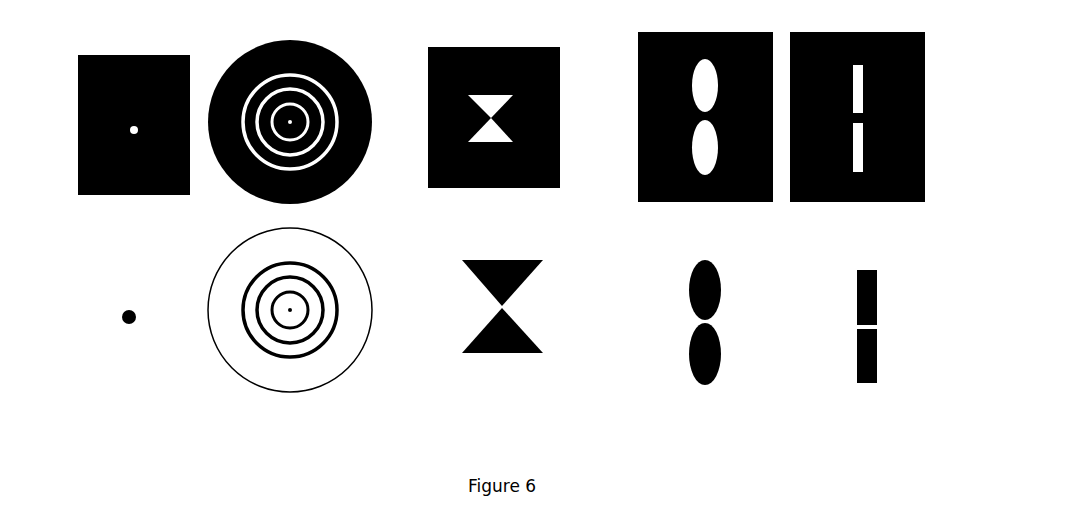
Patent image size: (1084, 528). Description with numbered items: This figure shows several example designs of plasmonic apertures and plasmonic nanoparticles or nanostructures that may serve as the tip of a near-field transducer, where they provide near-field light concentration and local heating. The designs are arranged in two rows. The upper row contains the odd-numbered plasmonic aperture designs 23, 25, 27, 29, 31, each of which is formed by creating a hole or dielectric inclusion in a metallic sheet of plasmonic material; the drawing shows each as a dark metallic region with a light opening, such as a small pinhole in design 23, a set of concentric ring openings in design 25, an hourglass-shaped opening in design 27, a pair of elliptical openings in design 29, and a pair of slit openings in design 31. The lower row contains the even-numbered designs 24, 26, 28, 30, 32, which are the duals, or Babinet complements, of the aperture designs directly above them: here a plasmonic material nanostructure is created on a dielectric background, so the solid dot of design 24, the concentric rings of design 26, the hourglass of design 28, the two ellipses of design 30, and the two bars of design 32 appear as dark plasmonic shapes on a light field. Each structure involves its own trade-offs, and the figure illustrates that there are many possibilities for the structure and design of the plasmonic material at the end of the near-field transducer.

The plasmonic aperture design 23 is at (134, 109).
The plasmonic nanostructure design 24 is at (127, 337).
The plasmonic aperture design 25 is at (290, 109).
The plasmonic nanostructure design 26 is at (290, 329).
The plasmonic aperture design 27 is at (494, 101).
The plasmonic nanostructure design 28 is at (502, 322).
The plasmonic aperture design 29 is at (705, 105).
The plasmonic nanostructure design 30 is at (705, 340).
The plasmonic aperture design 31 is at (857, 105).
The plasmonic nanostructure design 32 is at (867, 345).